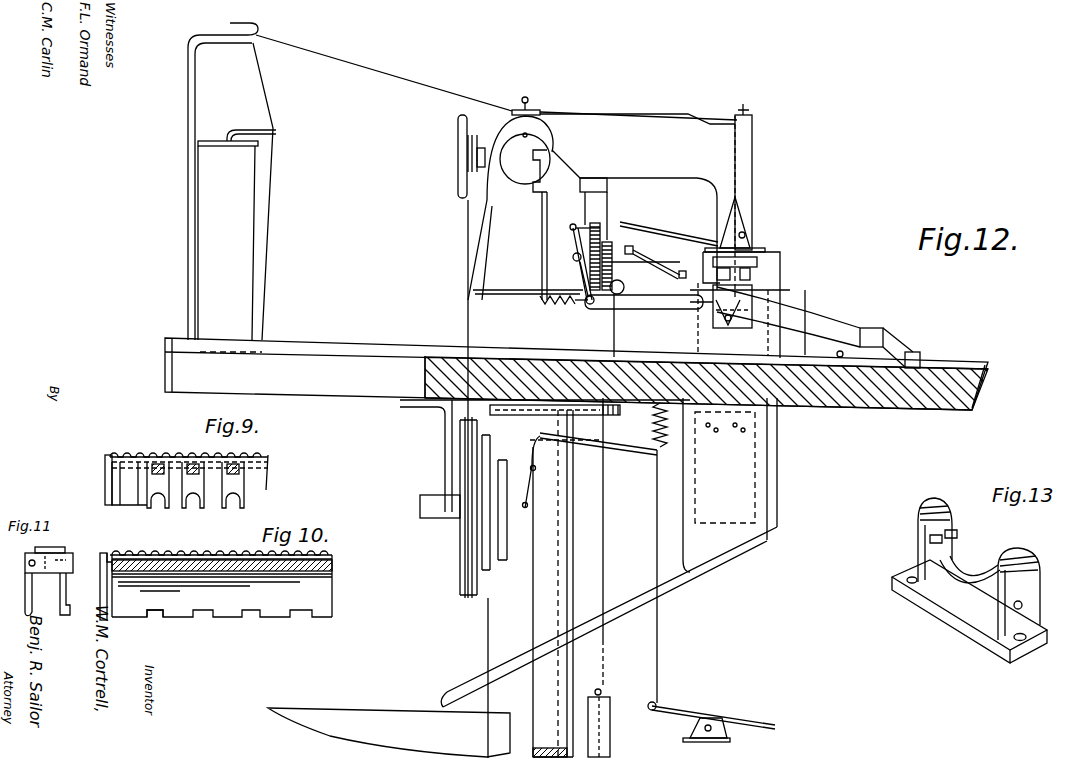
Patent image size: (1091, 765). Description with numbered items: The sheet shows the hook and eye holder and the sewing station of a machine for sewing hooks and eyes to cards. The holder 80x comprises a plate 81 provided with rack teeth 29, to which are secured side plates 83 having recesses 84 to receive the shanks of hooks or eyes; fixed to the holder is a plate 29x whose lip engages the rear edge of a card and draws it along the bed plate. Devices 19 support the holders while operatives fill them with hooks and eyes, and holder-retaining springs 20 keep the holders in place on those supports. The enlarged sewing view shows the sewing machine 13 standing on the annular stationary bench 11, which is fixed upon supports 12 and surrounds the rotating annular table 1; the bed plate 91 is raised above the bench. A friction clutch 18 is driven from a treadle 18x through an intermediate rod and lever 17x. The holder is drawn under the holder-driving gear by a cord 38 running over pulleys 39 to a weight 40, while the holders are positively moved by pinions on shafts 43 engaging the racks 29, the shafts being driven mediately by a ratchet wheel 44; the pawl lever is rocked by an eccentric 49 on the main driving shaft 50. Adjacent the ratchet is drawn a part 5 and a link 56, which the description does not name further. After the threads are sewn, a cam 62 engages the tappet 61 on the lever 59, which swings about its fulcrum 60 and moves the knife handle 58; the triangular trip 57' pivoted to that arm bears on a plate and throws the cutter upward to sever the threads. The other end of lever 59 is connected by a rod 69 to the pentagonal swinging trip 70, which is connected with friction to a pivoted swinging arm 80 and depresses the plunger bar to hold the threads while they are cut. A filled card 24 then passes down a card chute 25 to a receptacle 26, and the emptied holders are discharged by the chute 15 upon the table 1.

In FIG. 12, the rotating annular table 1 is at (976, 398).
In FIG. 12, the rack bar 5 is at (612, 248).
In FIG. 12, the annular stationary bench 11 is at (576, 374).
In FIG. 12, the supports 12 is at (545, 606).
In FIG. 12, the sewing machine 13 is at (605, 198).
In FIG. 12, the chute 15 is at (848, 325).
In FIG. 12, the intermediate rod and lever 17x is at (656, 487).
In FIG. 12, the friction clutch 18 is at (494, 507).
In FIG. 12, the treadle 18x is at (713, 714).
In FIG. 13, the holder supporting devices 19 is at (969, 611).
In FIG. 13, the holder-retaining springs 20 is at (935, 503).
In FIG. 12, the filled card 24 is at (745, 496).
In FIG. 12, the card chute 25 is at (688, 578).
In FIG. 12, the receptacle 26 is at (389, 732).
In FIG. 9, the rack teeth 29 is at (266, 463).
In FIG. 10, the rack teeth 29 is at (221, 544).
In FIG. 9, the plate 29x is at (105, 481).
In FIG. 10, the plate 29x is at (100, 601).
In FIG. 12, the cord 38 is at (613, 543).
In FIG. 12, the pulleys 39 is at (624, 318).
In FIG. 12, the weight 40 is at (612, 740).
In FIG. 12, the shafts 43 is at (646, 264).
In FIG. 12, the ratchet wheel 44 is at (603, 227).
In FIG. 12, the eccentric 49 is at (663, 253).
In FIG. 12, the main driving shaft 50 is at (575, 236).
In FIG. 12, the connecting rod 56 is at (656, 258).
In FIG. 12, the angular piece or trip 57' is at (732, 317).
In FIG. 12, the rod or knife handle 58 is at (650, 306).
In FIG. 12, the lever 59 is at (575, 307).
In FIG. 12, the fulcrum 60 is at (566, 256).
In FIG. 12, the tappet 61 is at (565, 242).
In FIG. 12, the cam 62 is at (570, 279).
In FIG. 12, the rod 69 is at (669, 229).
In FIG. 12, the swinging angular piece or trip 70 is at (746, 236).
In FIG. 12, the pivoted swinging arm 80 is at (750, 222).
In FIG. 10, the hook and eye holder 80x is at (106, 546).
In FIG. 10, the plate 81 is at (237, 573).
In FIG. 10, the side plates 83 is at (222, 586).
In FIG. 10, the recesses 84 is at (147, 619).
In FIG. 12, the bed plate 91 is at (528, 283).